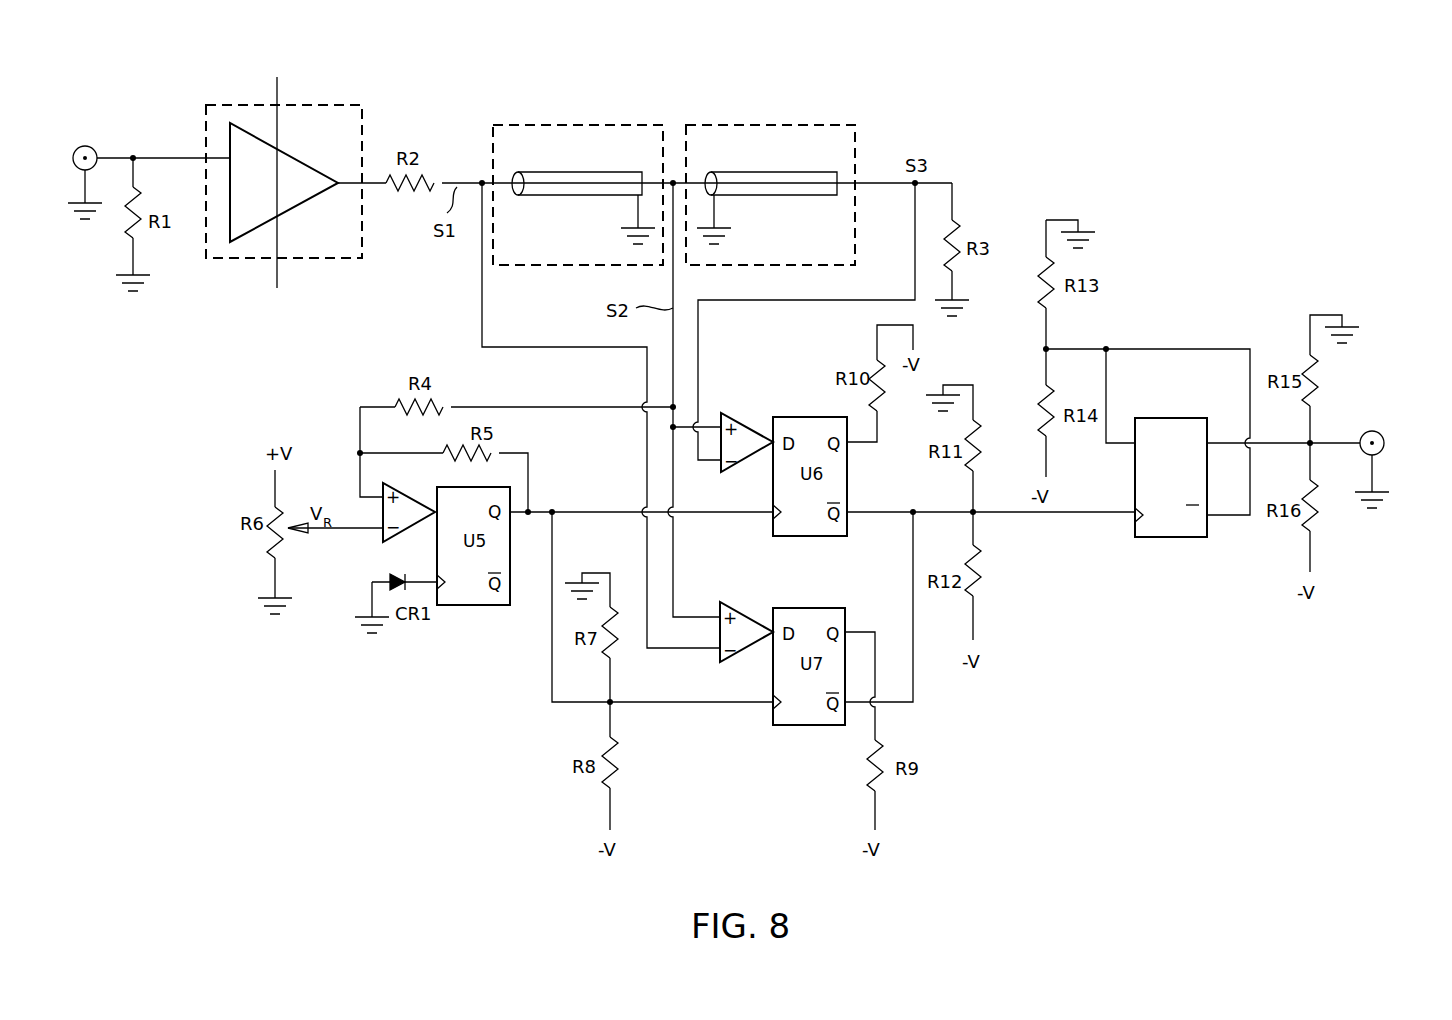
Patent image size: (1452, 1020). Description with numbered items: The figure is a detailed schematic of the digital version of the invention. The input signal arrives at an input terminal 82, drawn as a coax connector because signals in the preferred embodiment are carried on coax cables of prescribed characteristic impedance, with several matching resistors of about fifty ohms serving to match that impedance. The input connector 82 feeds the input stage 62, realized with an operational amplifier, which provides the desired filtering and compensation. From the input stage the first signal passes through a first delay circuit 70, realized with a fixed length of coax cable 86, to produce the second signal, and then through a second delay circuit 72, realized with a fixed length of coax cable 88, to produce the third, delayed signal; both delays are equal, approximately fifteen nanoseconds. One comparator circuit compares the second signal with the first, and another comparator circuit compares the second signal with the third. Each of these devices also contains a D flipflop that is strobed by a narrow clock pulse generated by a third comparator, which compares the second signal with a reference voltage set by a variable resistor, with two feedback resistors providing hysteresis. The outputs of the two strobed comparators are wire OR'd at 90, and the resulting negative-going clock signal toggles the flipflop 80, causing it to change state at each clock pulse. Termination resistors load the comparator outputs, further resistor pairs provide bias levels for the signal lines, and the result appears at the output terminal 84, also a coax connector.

The input stage 62 is at (363, 117).
The first delay circuit 70 is at (583, 125).
The second delay circuit 72 is at (773, 125).
The flipflop 80 is at (1172, 538).
The input terminal 82 is at (73, 166).
The output terminal 84 is at (1383, 450).
The coax cable 86 is at (568, 205).
The coax cable 88 is at (789, 205).
The wire OR connection 90 is at (887, 518).